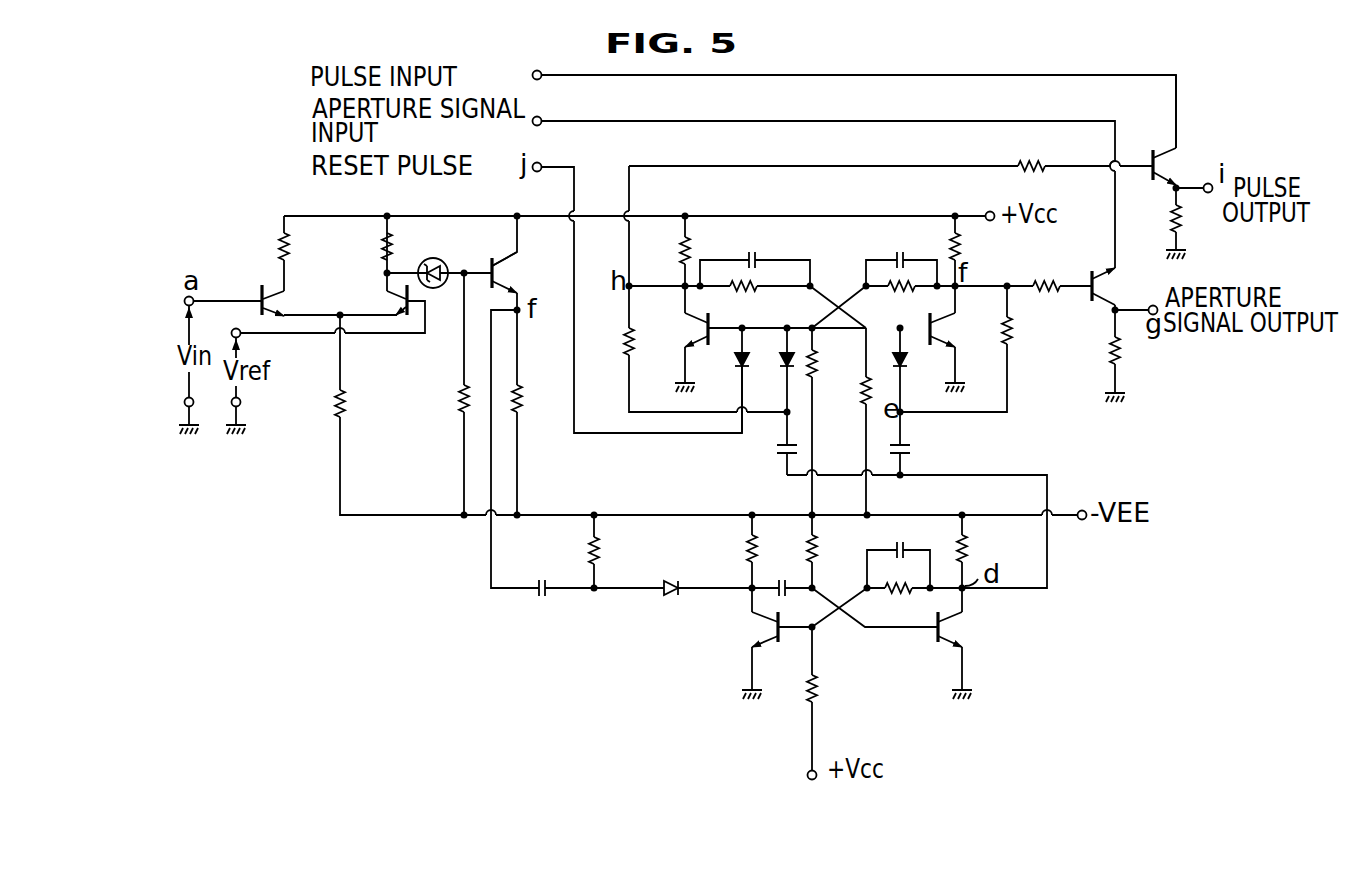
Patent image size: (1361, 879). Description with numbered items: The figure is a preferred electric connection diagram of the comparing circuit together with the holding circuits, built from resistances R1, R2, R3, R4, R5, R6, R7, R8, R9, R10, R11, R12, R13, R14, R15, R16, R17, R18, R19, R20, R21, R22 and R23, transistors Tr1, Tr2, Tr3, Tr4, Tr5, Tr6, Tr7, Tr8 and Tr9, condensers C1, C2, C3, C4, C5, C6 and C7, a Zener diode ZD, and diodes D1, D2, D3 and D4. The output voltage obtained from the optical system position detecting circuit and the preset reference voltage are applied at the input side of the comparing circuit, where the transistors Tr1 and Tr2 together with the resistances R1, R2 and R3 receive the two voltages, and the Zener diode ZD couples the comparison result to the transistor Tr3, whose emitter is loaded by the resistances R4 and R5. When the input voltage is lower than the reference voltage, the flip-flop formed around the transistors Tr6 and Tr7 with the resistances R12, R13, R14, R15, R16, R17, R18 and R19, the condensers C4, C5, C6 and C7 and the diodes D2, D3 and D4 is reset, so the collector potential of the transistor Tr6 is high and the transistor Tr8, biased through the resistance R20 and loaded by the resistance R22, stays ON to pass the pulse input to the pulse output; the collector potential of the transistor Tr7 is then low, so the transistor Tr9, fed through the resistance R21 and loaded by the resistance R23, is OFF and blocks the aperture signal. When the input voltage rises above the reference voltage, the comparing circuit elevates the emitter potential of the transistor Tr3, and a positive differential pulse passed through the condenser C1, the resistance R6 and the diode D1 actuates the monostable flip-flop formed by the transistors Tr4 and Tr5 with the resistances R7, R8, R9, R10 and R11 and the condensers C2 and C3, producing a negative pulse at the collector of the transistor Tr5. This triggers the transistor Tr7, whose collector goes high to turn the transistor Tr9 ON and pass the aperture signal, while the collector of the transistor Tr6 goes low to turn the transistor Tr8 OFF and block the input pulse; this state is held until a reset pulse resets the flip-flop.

The resistance R1 is at (297, 253).
The resistance R2 is at (371, 247).
The resistance R3 is at (356, 402).
The resistance R4 is at (446, 395).
The resistance R5 is at (534, 395).
The resistance R6 is at (611, 548).
The resistance R7 is at (735, 550).
The resistance R8 is at (979, 546).
The resistance R9 is at (796, 550).
The resistance R10 is at (902, 602).
The resistance R11 is at (832, 686).
The resistance R12 is at (665, 250).
The resistance R13 is at (975, 244).
The resistance R14 is at (746, 302).
The resistance R15 is at (900, 302).
The resistance R16 is at (830, 357).
The resistance R17 is at (847, 393).
The resistance R18 is at (611, 337).
The resistance R19 is at (1028, 328).
The resistance R20 is at (1034, 152).
The resistance R21 is at (1046, 271).
The resistance R22 is at (1154, 222).
The resistance R23 is at (1093, 353).
The condenser C1 is at (538, 574).
The condenser C2 is at (798, 602).
The condenser C3 is at (902, 536).
The condenser C4 is at (752, 246).
The condenser C5 is at (901, 246).
The condenser C6 is at (771, 453).
The condenser C7 is at (916, 447).
The diode D1 is at (665, 571).
The diode D2 is at (772, 346).
The diode D3 is at (918, 360).
The diode D4 is at (726, 369).
The Zener diode ZD is at (434, 259).
The transistor Tr1 is at (293, 296).
The transistor Tr2 is at (374, 296).
The transistor Tr3 is at (525, 271).
The transistor Tr4 is at (745, 655).
The transistor Tr5 is at (974, 653).
The transistor Tr6 is at (677, 352).
The transistor Tr7 is at (963, 347).
The transistor Tr8 is at (1190, 161).
The transistor Tr9 is at (1127, 280).